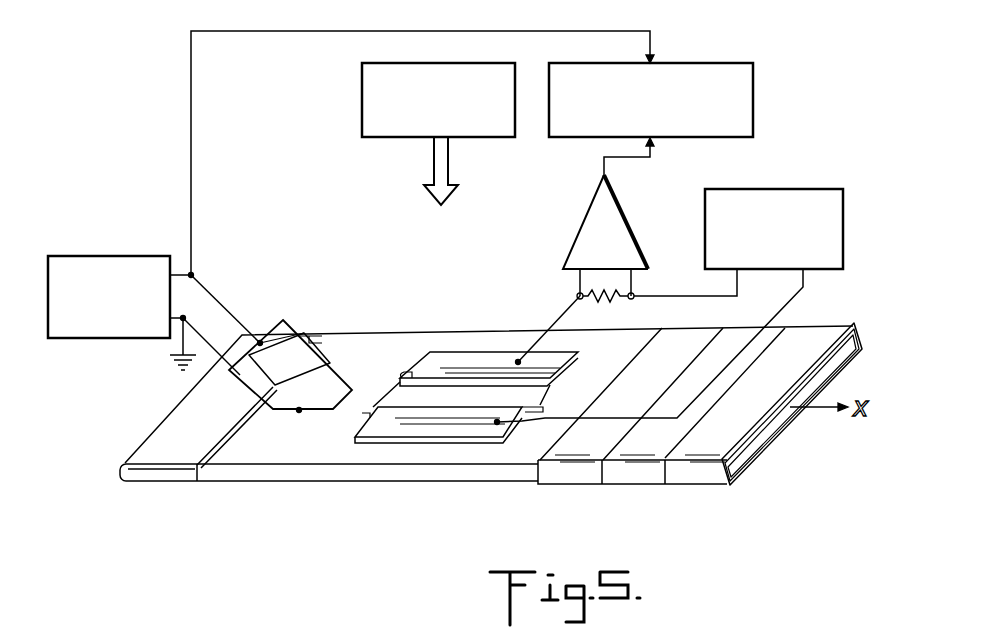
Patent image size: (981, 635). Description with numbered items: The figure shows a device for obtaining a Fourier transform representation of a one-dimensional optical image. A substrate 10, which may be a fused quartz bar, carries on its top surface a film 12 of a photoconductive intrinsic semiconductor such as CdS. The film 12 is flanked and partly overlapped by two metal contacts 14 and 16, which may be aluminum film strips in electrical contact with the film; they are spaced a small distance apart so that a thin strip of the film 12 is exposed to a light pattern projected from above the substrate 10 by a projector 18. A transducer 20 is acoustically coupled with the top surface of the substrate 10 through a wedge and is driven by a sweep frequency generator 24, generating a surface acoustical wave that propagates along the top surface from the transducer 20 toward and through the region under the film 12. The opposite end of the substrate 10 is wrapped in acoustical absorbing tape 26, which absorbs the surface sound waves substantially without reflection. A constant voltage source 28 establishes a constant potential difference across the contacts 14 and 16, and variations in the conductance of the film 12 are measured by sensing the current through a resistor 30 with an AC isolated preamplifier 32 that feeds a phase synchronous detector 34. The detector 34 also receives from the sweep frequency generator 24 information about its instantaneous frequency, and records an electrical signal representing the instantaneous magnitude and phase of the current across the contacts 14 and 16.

The substrate 10 is at (348, 486).
The film 12 is at (380, 388).
The electrical contact 14 is at (441, 418).
The electrical contact 16 is at (488, 352).
The projector 18 is at (433, 63).
The transducer 20 is at (286, 393).
The sweep frequency generator 24 is at (105, 255).
The acoustical absorbing tape 26 is at (629, 492).
The constant voltage source 28 is at (787, 188).
The resistor 30 is at (600, 301).
The AC isolated preamplifier 32 is at (632, 222).
The phase synchronous detector 34 is at (753, 110).